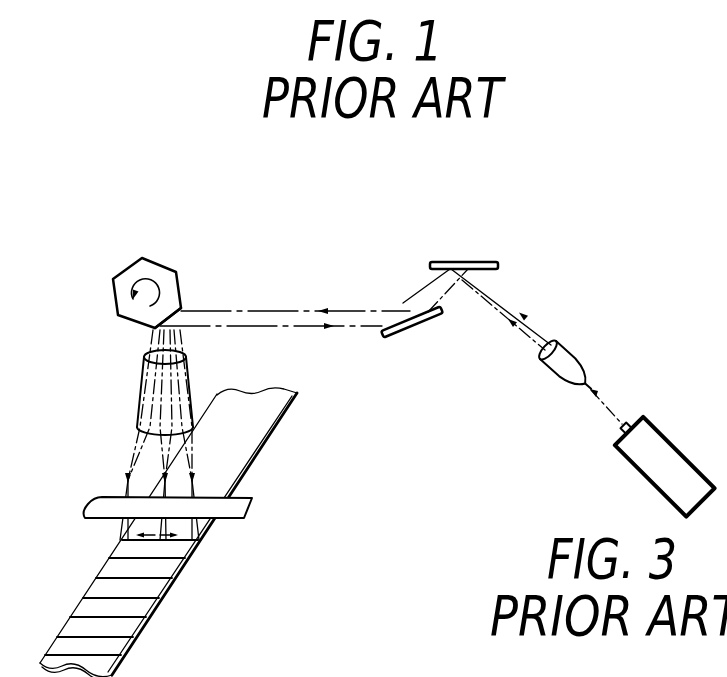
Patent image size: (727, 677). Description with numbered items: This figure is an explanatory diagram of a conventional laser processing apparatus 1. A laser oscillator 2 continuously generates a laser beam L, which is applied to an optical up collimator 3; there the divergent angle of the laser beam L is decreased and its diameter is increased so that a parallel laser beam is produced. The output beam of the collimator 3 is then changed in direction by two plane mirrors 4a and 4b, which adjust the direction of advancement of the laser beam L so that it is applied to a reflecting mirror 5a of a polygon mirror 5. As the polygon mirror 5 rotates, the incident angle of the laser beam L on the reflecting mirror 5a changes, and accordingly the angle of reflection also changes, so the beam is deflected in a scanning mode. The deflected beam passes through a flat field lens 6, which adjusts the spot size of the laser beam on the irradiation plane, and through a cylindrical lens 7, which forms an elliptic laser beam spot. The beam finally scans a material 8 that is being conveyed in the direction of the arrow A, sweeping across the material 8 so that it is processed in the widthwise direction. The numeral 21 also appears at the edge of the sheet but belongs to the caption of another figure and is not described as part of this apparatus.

In FIG. 1, the optical scanning apparatus (prior art) 1 is at (338, 228).
In FIG. 1, the laser oscillator 2 is at (670, 462).
In FIG. 1, the optical up collimator 3 is at (567, 362).
In FIG. 1, the plane mirror 4a is at (480, 262).
In FIG. 1, the plane mirror 4b is at (415, 328).
In FIG. 1, the polygon mirror 5 is at (165, 272).
In FIG. 1, the reflecting mirror 5a is at (152, 328).
In FIG. 1, the flat field lens 6 is at (140, 372).
In FIG. 1, the cylindrical lens 7 is at (243, 505).
In FIG. 1, the material 8 is at (158, 588).
In FIG. 1, the direction of conveyance A is at (105, 625).
In FIG. 1, the laser beam L is at (610, 414).
In FIG. 3, the component of FIG. 3 21 is at (684, 676).